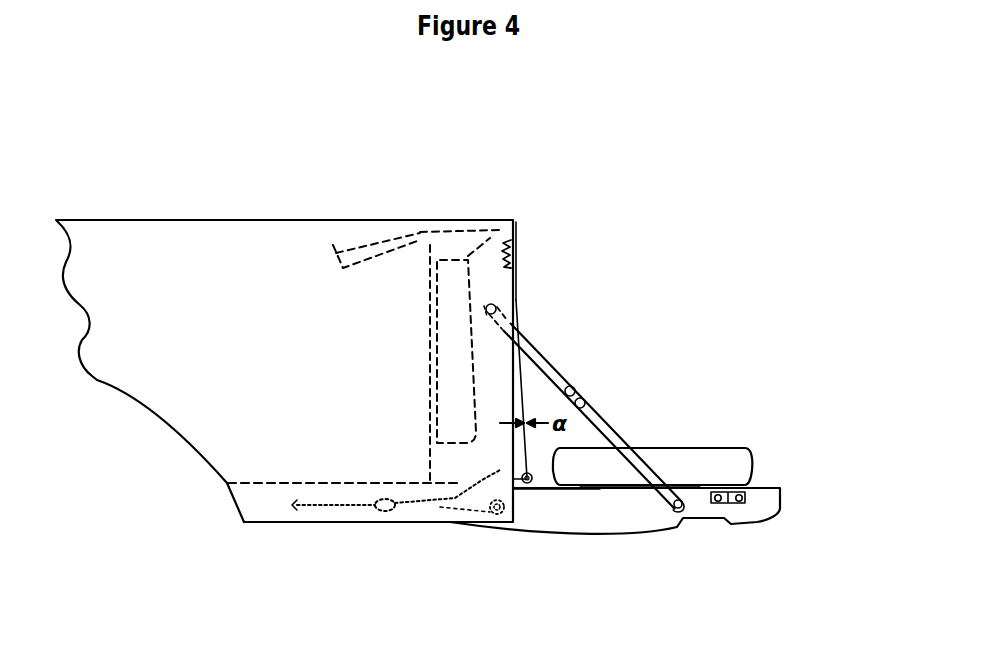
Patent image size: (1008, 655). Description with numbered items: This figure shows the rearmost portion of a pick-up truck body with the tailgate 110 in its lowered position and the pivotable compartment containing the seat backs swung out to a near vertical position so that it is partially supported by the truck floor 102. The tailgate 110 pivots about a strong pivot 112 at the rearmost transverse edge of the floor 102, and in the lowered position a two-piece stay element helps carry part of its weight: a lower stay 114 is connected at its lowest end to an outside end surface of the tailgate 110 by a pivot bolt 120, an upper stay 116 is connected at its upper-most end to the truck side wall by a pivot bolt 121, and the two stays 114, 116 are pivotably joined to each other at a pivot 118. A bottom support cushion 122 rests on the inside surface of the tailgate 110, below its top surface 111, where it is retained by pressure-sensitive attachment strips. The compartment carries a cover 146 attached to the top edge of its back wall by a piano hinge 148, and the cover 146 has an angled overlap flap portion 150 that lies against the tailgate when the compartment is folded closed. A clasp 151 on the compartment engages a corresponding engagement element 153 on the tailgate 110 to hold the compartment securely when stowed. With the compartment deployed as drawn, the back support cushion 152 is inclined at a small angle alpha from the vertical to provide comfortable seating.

The floor 102 is at (233, 487).
The tailgate 110 is at (606, 518).
The top surface of tailgate 111 is at (783, 497).
The pivot 112 is at (503, 523).
The lower stay 114 is at (623, 436).
The upper stay 116 is at (530, 347).
The pivot 118 is at (584, 399).
The pivot bolt 120 is at (690, 510).
The pivot bolt 121 is at (503, 305).
The bottom support cushion 122 is at (688, 460).
The cover 146 is at (398, 232).
The piano hinge 148 is at (440, 254).
The angled overlap flap portion 150 is at (345, 240).
The clasp 151 is at (520, 243).
The back support cushion 152 is at (495, 226).
The engagement element 153 is at (750, 485).